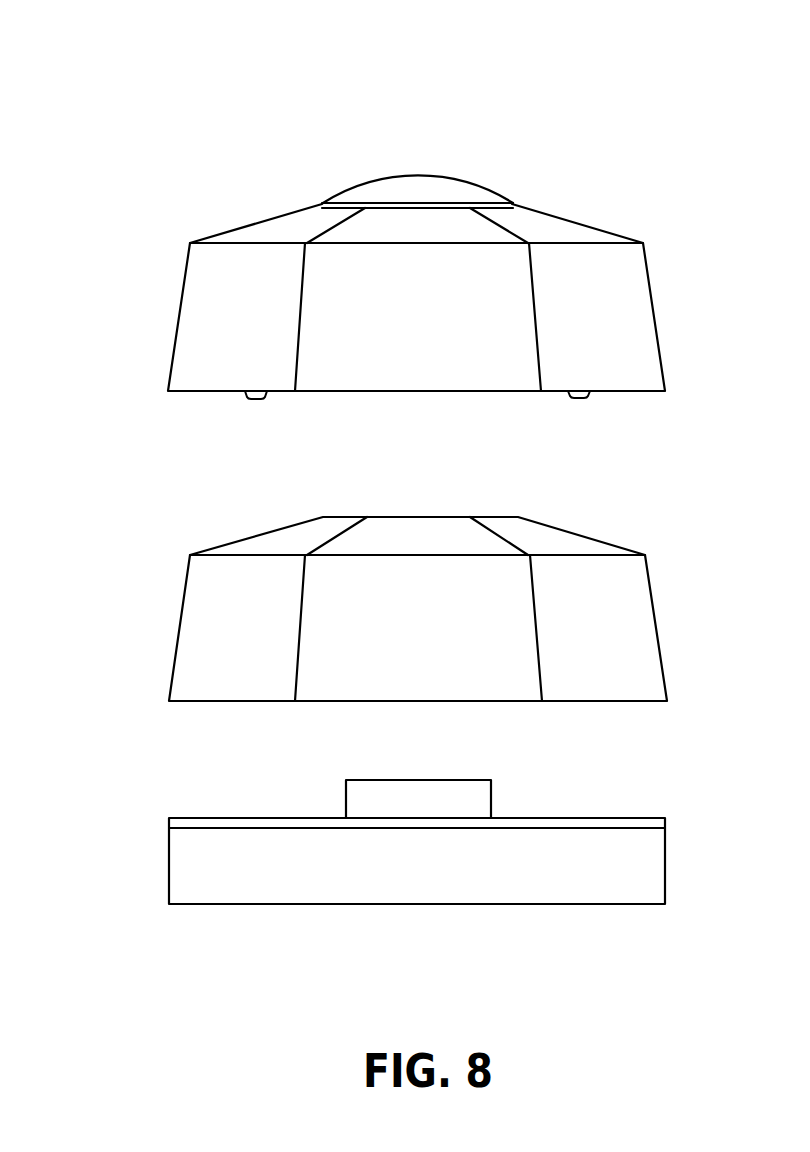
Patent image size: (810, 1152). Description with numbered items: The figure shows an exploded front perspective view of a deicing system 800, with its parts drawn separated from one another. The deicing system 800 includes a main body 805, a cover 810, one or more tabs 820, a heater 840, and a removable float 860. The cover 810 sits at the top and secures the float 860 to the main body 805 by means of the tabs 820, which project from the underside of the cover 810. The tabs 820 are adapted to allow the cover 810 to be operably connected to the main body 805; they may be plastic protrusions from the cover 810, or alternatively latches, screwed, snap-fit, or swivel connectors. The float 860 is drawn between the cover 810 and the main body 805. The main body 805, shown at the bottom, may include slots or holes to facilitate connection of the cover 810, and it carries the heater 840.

The deicing system 800 is at (156, 60).
The cover 810 is at (545, 232).
The tabs 820 is at (254, 399).
The removable float 860 is at (637, 590).
The main body 805 is at (568, 815).
The heater 840 is at (568, 905).